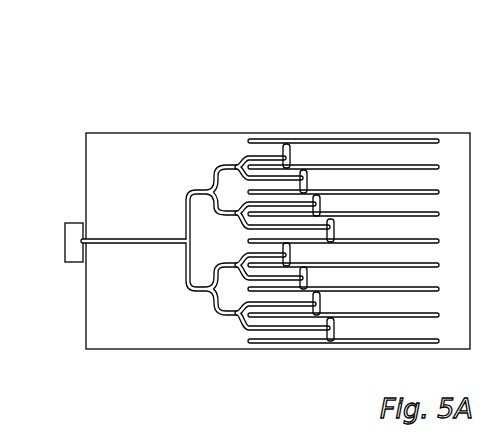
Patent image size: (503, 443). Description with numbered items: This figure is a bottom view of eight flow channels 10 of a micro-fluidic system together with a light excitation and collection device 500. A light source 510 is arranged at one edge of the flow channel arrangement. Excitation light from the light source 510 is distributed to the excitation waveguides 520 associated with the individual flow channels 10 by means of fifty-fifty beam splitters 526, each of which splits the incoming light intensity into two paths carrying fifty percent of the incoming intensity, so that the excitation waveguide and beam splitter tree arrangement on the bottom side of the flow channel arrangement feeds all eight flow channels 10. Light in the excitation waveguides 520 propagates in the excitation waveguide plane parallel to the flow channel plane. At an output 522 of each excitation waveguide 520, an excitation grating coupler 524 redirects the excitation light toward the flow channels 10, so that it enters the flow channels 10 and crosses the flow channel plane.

The light excitation and collection device 500 is at (109, 93).
The light source 510 is at (73, 227).
The excitation waveguides 520 is at (277, 180).
The output 522 is at (316, 195).
The excitation grating coupler 524 is at (315, 191).
The 50/50 beam splitters 526 is at (243, 162).
The flow channels 10 is at (408, 210).